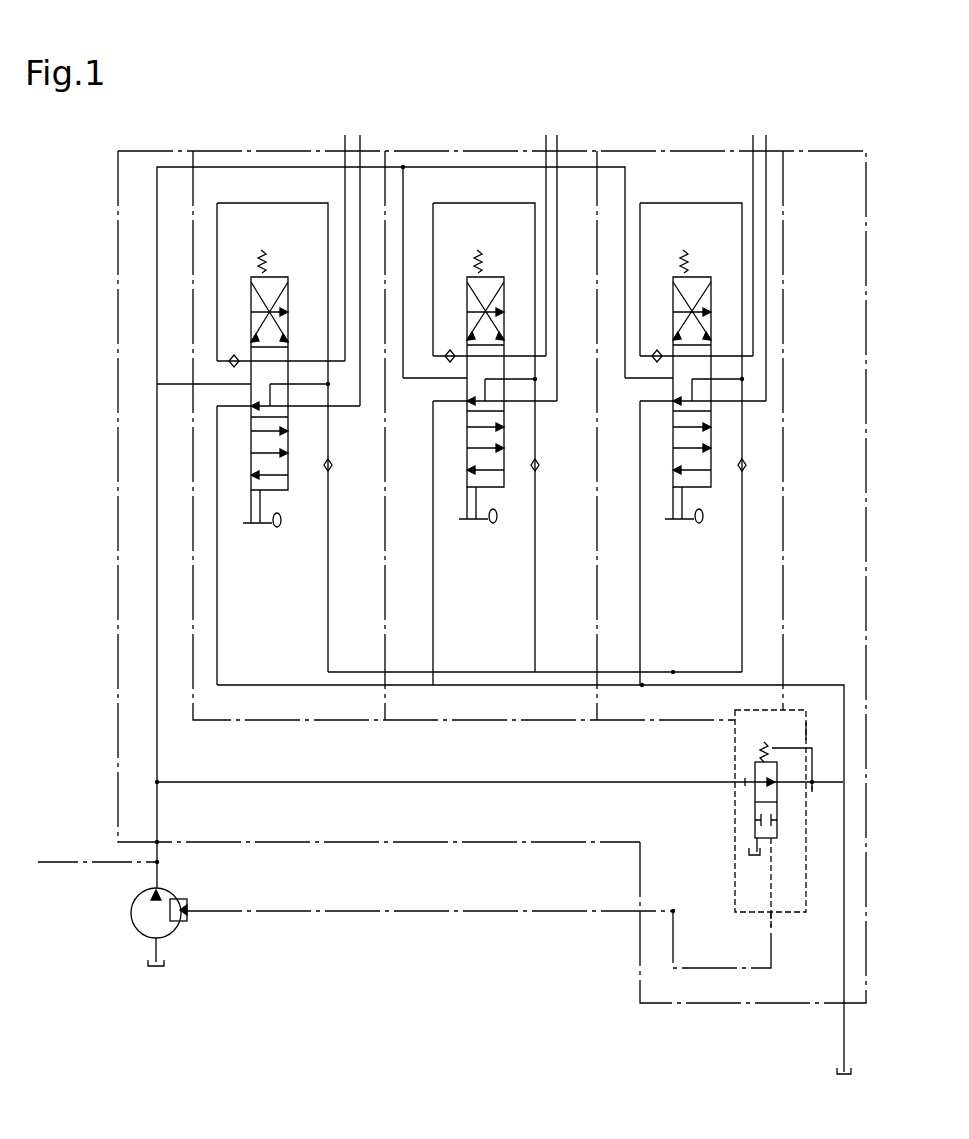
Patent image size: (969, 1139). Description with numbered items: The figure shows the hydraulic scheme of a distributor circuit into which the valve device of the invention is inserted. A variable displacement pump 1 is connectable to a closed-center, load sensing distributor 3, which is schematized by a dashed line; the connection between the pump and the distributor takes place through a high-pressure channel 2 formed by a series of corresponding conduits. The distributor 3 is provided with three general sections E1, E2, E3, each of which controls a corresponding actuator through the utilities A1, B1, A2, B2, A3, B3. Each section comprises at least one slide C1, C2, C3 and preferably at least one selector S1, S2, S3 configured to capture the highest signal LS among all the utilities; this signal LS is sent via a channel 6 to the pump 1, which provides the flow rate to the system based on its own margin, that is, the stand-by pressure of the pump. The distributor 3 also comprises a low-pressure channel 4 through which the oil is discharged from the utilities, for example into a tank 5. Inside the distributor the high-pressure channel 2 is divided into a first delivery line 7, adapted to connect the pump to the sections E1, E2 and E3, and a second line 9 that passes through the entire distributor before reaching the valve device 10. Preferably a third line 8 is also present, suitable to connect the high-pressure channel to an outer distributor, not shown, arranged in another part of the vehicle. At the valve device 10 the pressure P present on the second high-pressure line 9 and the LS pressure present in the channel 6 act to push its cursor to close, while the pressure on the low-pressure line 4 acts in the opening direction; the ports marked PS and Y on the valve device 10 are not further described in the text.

The variable displacement pump 1 is at (143, 918).
The high-pressure channel 2 is at (166, 857).
The load sensing distributor 3 is at (391, 148).
The low-pressure channel 4 is at (492, 577).
The tank 5 is at (534, 873).
The channel 6 is at (479, 819).
The first delivery line 7 is at (405, 526).
The third line 8 is at (339, 506).
The second line 9 is at (499, 796).
The valve device 10 is at (772, 824).
The slide C1 is at (262, 270).
The slide C2 is at (478, 270).
The slide C3 is at (684, 270).
The first general section E1 is at (268, 190).
The second general section E2 is at (476, 190).
The third general section E3 is at (680, 190).
The utility A1 is at (345, 230).
The utility A2 is at (540, 228).
The utility A3 is at (749, 228).
The utility B1 is at (367, 253).
The utility B2 is at (565, 250).
The utility B3 is at (779, 250).
The selector S1 is at (342, 461).
The selector S2 is at (549, 461).
The selector S3 is at (755, 467).
The pressure P is at (733, 770).
The pilot pressure port PS is at (814, 731).
The drain port Y is at (817, 794).
The LS signal LS is at (760, 925).